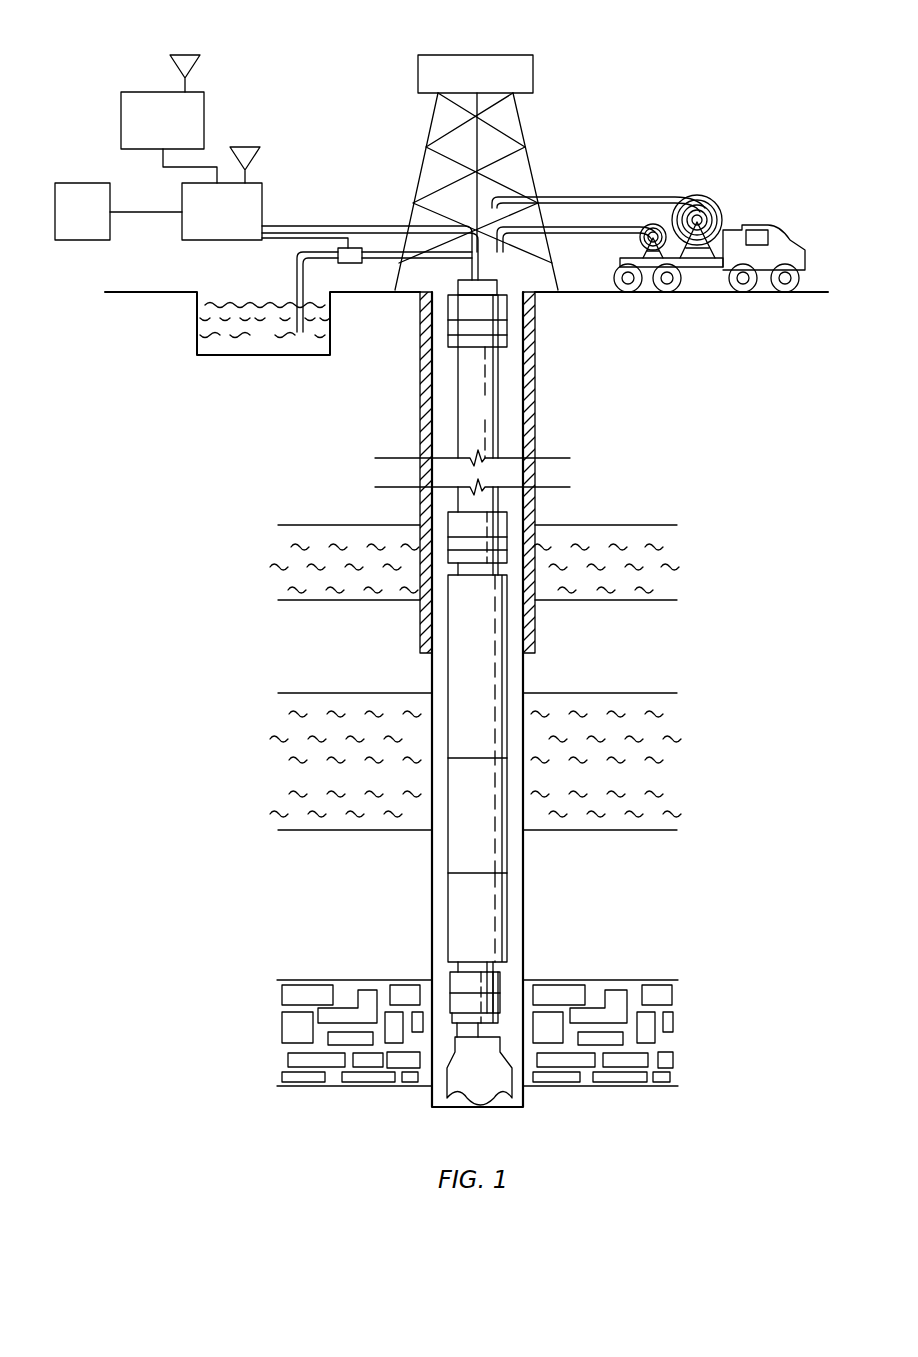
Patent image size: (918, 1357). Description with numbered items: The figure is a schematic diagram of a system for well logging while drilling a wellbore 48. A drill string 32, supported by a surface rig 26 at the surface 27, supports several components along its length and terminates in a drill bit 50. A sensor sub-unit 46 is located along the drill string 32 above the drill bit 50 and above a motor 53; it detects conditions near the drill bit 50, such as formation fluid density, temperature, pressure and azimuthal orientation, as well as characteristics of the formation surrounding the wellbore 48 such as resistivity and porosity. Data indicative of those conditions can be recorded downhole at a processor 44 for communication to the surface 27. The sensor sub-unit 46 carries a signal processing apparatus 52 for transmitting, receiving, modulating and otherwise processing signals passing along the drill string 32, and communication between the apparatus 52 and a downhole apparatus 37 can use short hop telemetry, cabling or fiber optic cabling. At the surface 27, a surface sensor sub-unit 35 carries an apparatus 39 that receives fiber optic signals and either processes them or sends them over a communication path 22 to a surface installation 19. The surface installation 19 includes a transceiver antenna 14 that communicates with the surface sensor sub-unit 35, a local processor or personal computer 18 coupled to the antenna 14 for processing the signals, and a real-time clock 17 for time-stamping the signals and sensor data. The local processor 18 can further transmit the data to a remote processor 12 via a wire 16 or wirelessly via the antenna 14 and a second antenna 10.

The antenna 10 is at (188, 52).
The remote processor 12 is at (204, 108).
The transceiver antenna 14 is at (257, 147).
The wire 16 is at (163, 162).
The real-time clock 17 is at (68, 240).
The local processor 18 is at (198, 233).
The surface installation 19 is at (222, 207).
The communication path 22 is at (318, 224).
The surface rig 26 is at (537, 130).
The surface 27 is at (115, 290).
The drill string 32 is at (480, 415).
The surface sensor sub-unit 35 is at (574, 243).
The downhole apparatus 37 is at (493, 537).
The apparatus 39 is at (488, 327).
The processor 44 is at (455, 838).
The sensor sub-unit 46 is at (460, 933).
The wellbore 48 is at (518, 895).
The drill bit 50 is at (487, 1075).
The signal processing apparatus 52 is at (500, 984).
The motor 53 is at (457, 1000).